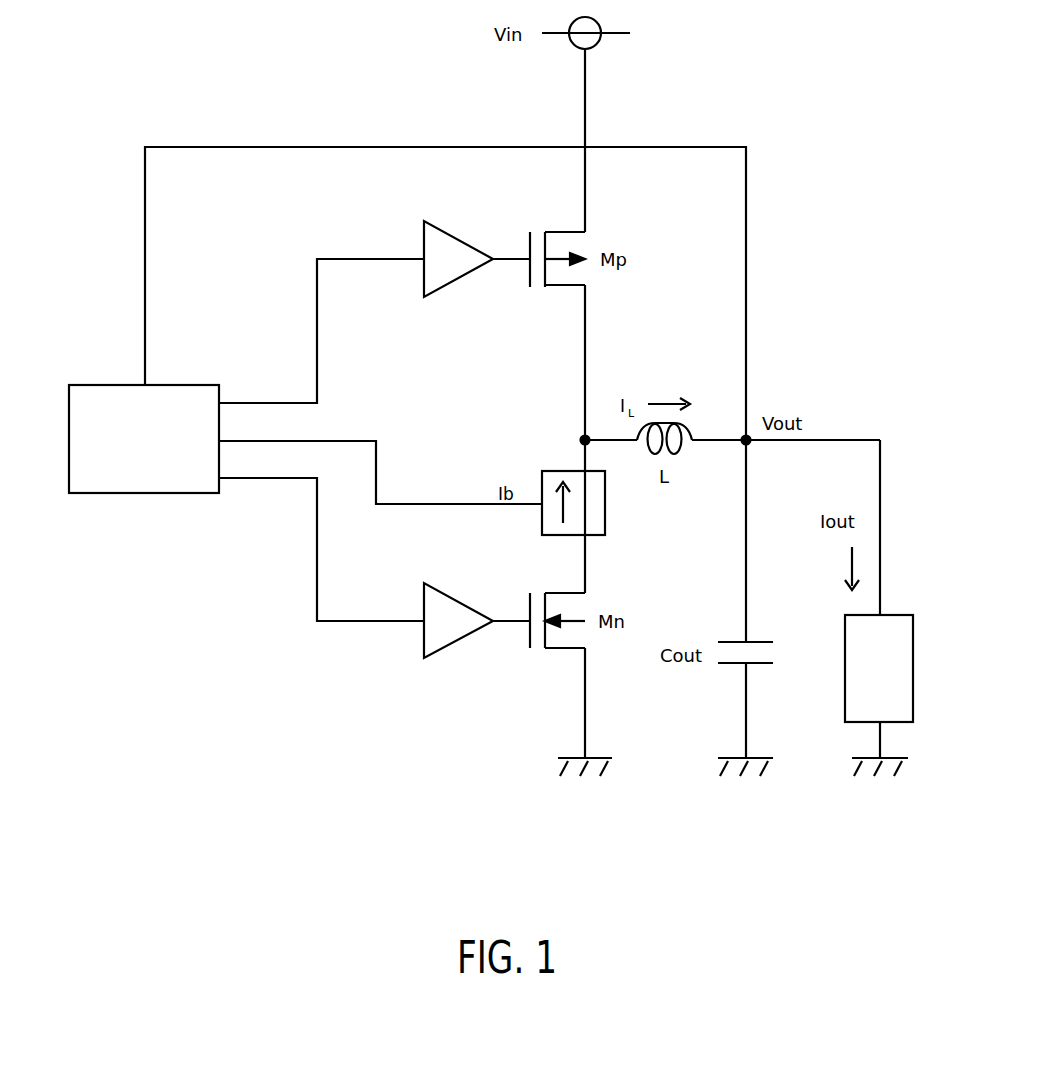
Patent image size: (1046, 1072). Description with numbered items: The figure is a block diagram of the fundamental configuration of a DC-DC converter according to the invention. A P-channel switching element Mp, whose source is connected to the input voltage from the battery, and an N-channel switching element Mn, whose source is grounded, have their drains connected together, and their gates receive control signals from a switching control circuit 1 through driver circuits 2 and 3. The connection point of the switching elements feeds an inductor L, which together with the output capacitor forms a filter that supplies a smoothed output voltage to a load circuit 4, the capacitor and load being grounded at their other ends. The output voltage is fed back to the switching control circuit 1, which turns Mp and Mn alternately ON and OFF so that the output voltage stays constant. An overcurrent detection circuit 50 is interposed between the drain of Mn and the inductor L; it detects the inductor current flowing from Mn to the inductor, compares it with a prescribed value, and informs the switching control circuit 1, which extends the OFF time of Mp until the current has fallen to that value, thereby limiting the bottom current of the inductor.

The switching control circuit 1 is at (143, 498).
The driver circuit 2 is at (424, 297).
The driver circuit 3 is at (424, 658).
The load circuit 4 is at (845, 722).
The overcurrent detection circuit 50 is at (542, 471).